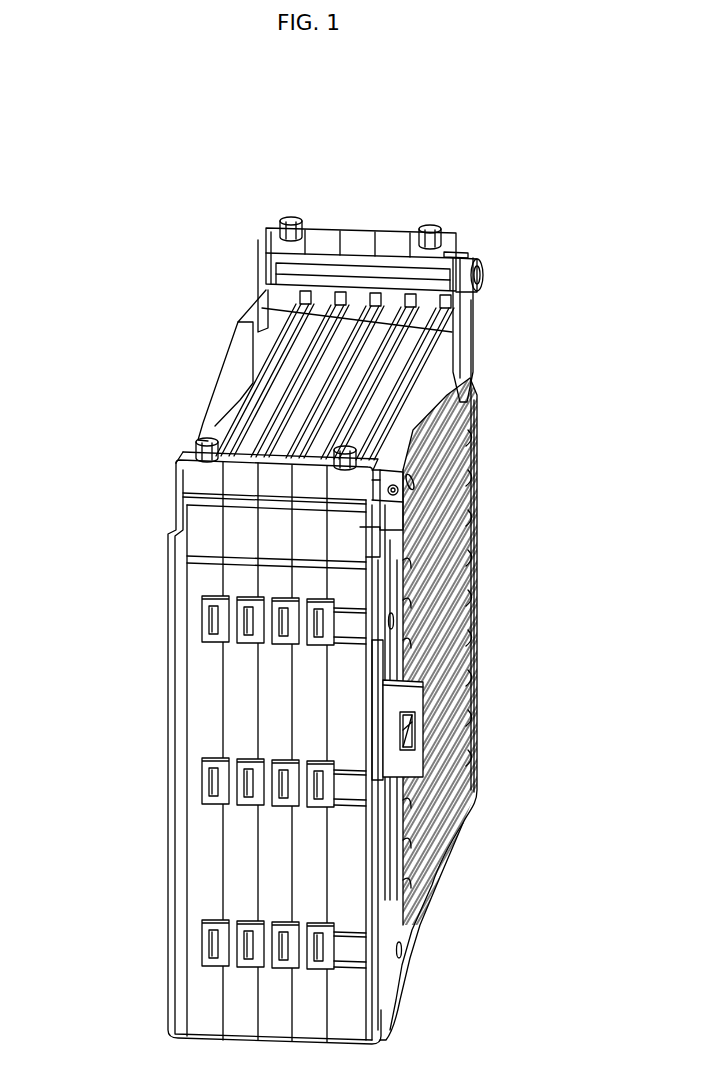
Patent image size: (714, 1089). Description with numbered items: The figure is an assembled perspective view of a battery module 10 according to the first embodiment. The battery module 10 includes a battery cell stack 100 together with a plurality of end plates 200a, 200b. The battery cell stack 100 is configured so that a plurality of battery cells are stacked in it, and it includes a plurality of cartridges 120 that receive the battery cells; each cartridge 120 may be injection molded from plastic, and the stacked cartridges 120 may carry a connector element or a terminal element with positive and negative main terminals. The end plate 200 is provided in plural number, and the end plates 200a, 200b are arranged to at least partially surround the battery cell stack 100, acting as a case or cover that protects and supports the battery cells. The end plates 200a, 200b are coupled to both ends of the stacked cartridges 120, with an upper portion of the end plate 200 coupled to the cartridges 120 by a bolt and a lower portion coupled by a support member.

The battery module 10 is at (267, 95).
The battery cell stack 100 is at (401, 186).
The cartridge 120 is at (362, 237).
The end plate 200 is at (118, 575).
The end plate 200a is at (167, 627).
The end plate 200b is at (462, 573).